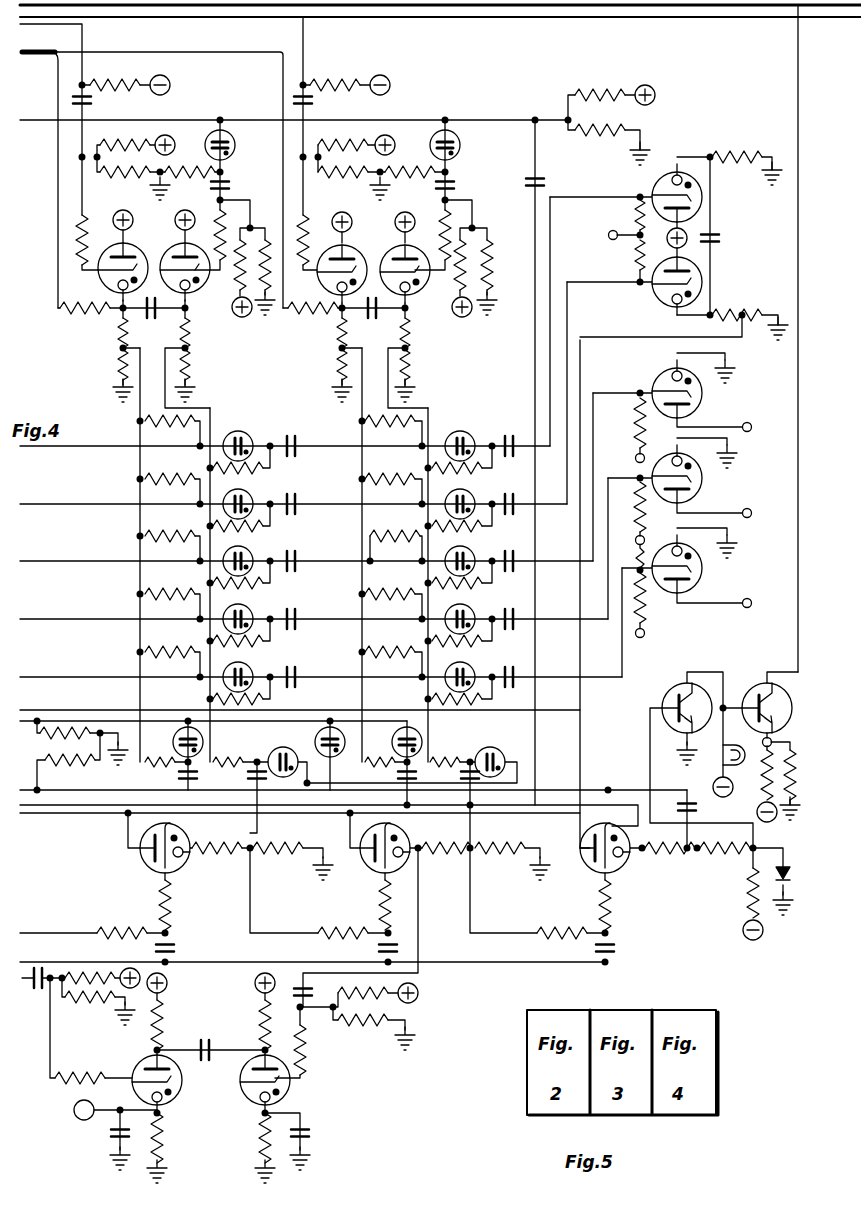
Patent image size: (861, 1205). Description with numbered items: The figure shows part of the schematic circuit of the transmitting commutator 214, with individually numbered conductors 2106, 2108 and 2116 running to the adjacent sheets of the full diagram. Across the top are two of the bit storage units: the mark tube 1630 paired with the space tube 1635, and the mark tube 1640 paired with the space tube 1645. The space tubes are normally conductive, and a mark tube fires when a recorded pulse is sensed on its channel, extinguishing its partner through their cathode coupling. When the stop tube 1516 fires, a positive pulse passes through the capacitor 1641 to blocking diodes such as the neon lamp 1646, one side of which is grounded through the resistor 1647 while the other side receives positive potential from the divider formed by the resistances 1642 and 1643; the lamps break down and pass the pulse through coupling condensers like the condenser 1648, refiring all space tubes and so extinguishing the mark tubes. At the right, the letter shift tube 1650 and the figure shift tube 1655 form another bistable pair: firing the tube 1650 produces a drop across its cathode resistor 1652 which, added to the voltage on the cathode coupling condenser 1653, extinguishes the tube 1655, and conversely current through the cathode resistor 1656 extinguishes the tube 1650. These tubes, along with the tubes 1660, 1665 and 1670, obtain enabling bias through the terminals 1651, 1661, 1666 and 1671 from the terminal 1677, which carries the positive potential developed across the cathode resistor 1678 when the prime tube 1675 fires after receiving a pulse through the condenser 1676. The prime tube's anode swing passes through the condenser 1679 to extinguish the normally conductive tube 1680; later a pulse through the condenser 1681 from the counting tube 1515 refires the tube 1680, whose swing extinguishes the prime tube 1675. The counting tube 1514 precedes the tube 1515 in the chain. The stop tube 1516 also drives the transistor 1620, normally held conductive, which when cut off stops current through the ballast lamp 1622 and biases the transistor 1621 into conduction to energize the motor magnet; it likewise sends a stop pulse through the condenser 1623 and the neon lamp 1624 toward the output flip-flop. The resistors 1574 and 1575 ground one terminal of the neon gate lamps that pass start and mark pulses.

The transmitting commutator 214 is at (631, 338).
The conductor 2106 is at (140, 18).
The conductor 2108 is at (84, 27).
The conductor 2116 is at (323, 6).
The mark tube 1630 is at (146, 270).
The space tube 1635 is at (198, 288).
The mark tube 1640 is at (366, 270).
The space tube 1645 is at (420, 288).
The capacitor 1641 is at (541, 172).
The resistance 1642 is at (572, 94).
The resistance 1643 is at (602, 132).
The neon lamp 1646 is at (460, 142).
The resistor 1647 is at (378, 146).
The coupling condenser 1648 is at (456, 190).
The letter shift tube 1650 is at (650, 182).
The terminal 1651 is at (605, 241).
The cathode resistor 1652 is at (763, 143).
The cathode coupling condenser 1653 is at (718, 222).
The figure shift tube 1655 is at (700, 265).
The cathode resistor 1656 is at (752, 298).
The tube 1660 is at (657, 382).
The terminal 1661 is at (622, 430).
The tube 1665 is at (703, 490).
The terminal 1666 is at (627, 526).
The tube 1670 is at (700, 588).
The terminal 1671 is at (645, 634).
The transistor 1620 is at (664, 668).
The transistor 1621 is at (750, 685).
The ballast lamp 1622 is at (710, 772).
The condenser 1623 is at (697, 800).
The resistor 1575 is at (99, 704).
The resistor 1574 is at (78, 790).
The neon lamp 1624 is at (318, 742).
The gaseous discharge tube 1514 is at (170, 875).
The gaseous discharge tube 1515 is at (372, 875).
The stop tube 1516 is at (617, 878).
The condenser 1676 is at (83, 943).
The condenser 1681 is at (300, 980).
The condenser 1679 is at (224, 1030).
The prime tube 1675 is at (138, 1052).
The tube 1680 is at (292, 1092).
The terminal 1677 is at (80, 1122).
The cathode resistor 1678 is at (162, 1140).